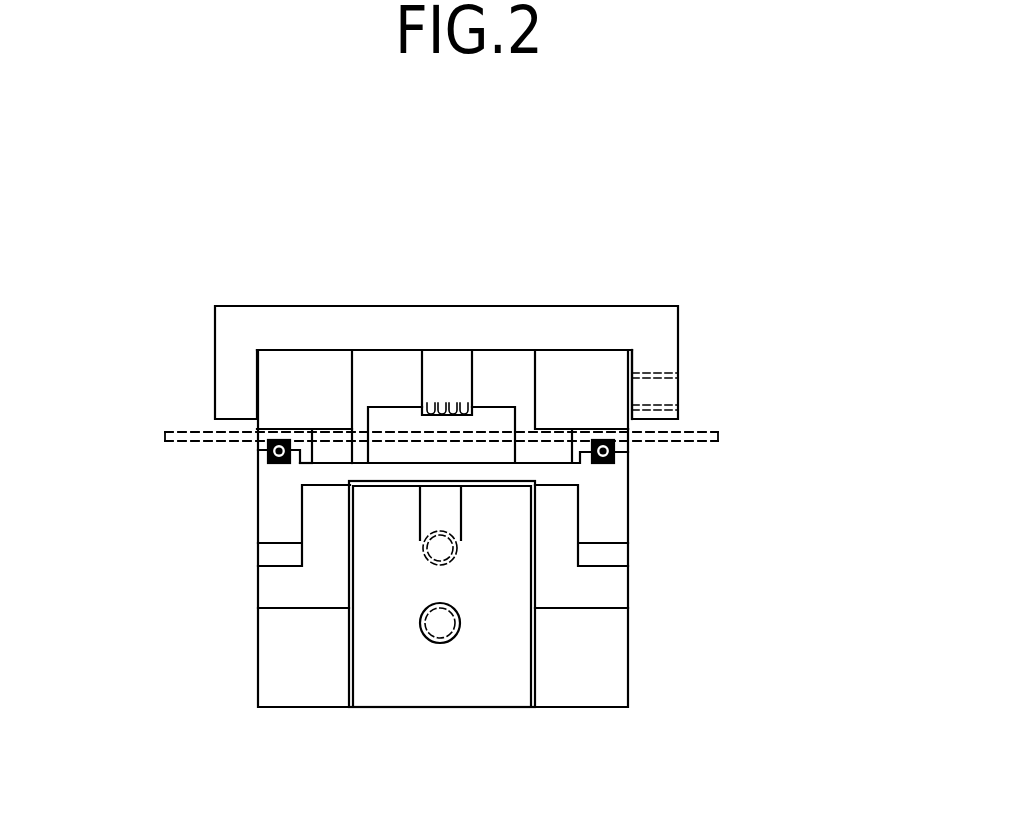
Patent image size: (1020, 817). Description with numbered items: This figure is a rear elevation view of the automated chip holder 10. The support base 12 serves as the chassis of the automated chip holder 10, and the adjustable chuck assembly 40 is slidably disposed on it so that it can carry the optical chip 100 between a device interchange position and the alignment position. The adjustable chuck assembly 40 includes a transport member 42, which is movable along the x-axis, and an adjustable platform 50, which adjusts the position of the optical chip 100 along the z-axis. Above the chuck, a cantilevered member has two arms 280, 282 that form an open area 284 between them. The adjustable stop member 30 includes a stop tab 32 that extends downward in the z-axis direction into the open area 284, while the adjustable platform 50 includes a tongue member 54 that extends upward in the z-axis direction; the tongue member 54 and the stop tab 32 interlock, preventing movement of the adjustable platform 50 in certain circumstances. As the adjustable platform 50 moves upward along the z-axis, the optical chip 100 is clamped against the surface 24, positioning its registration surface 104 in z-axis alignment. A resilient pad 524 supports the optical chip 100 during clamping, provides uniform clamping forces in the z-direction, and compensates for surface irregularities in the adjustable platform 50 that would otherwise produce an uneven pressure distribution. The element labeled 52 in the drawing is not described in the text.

The automated chip holder 10 is at (692, 189).
The support base 12 is at (603, 687).
The surface 24 is at (275, 430).
The adjustable stop member 30 is at (498, 333).
The stop tab 32 is at (442, 375).
The adjustable chuck assembly 40 is at (798, 561).
The transport member 42 is at (603, 593).
The adjustable platform 50 is at (612, 508).
The spacer 52 is at (332, 462).
The tongue member 54 is at (400, 420).
The optical chip 100 is at (163, 433).
The registration surface 104 is at (300, 430).
The arm 280 is at (605, 372).
The arm 282 is at (290, 385).
The open area 284 is at (515, 372).
The resilient pad 524 is at (280, 465).